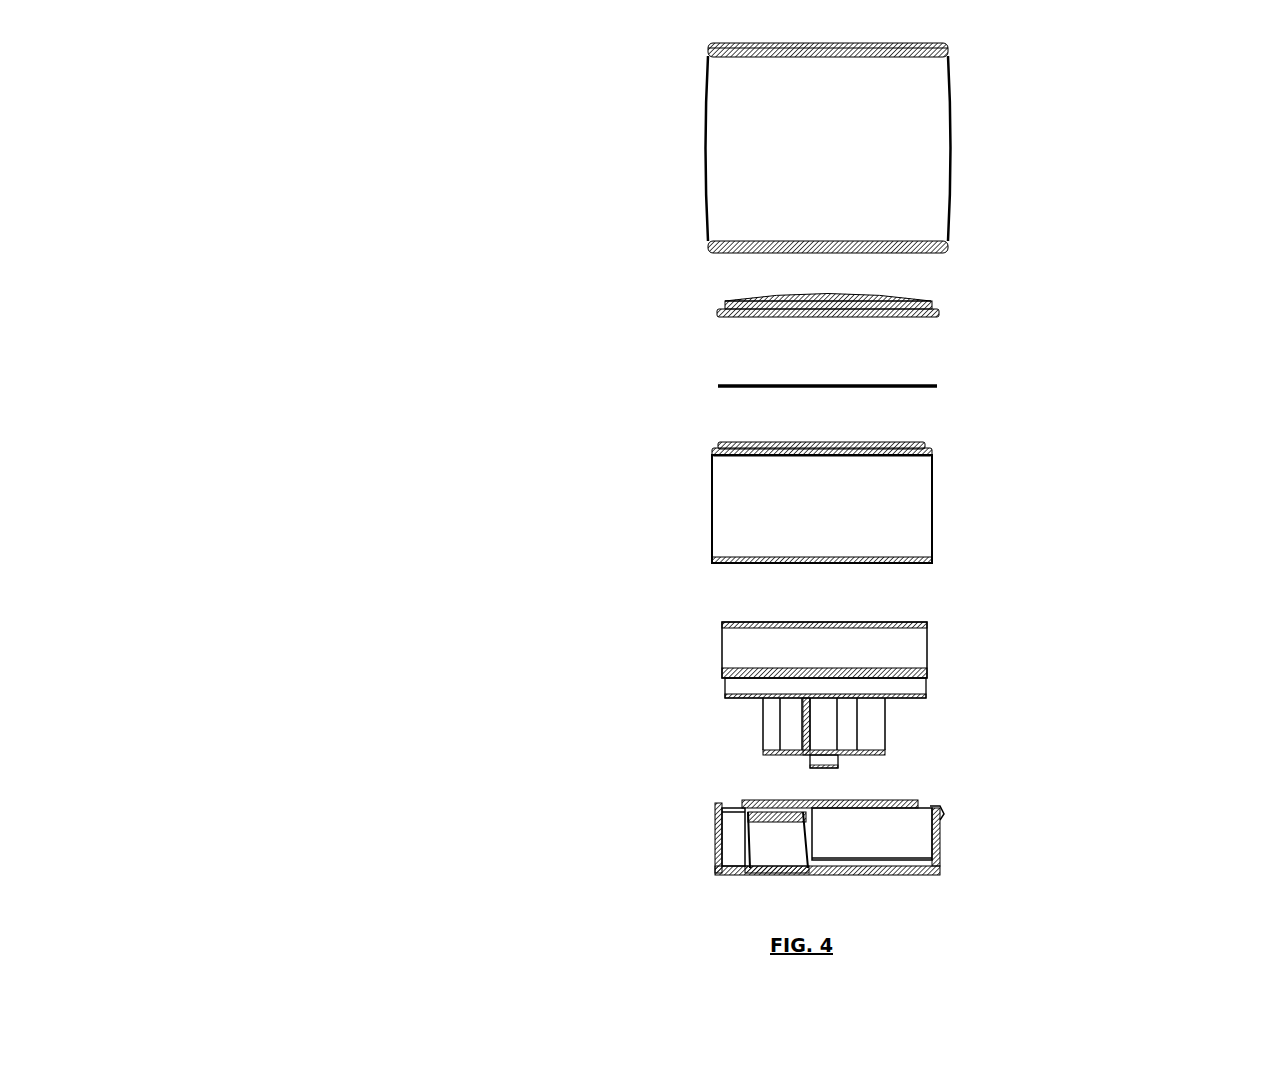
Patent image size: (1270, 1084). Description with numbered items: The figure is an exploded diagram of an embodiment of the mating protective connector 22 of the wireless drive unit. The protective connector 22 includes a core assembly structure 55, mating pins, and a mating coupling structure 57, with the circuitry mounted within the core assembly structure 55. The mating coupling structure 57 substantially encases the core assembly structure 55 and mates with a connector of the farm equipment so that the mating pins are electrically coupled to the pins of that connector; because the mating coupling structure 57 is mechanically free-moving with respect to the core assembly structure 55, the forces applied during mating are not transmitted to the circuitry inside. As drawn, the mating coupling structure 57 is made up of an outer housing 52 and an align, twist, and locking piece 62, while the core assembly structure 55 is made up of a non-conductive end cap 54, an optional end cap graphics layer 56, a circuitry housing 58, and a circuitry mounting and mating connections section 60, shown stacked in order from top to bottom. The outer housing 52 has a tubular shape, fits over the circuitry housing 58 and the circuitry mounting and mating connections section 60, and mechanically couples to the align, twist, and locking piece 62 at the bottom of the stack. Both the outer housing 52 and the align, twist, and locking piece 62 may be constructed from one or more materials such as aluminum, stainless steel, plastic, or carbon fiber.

The mating protective connector 22 is at (419, 927).
The outer housing 52 is at (953, 167).
The non-conductive end cap 54 is at (953, 307).
The core assembly structure 55 is at (683, 765).
The end cap graphics layer 56 is at (953, 382).
The mating coupling structure 57 is at (672, 166).
The circuitry housing 58 is at (933, 513).
The circuitry mounting and mating connections section 60 is at (933, 653).
The align, twist, and locking piece 62 is at (938, 850).